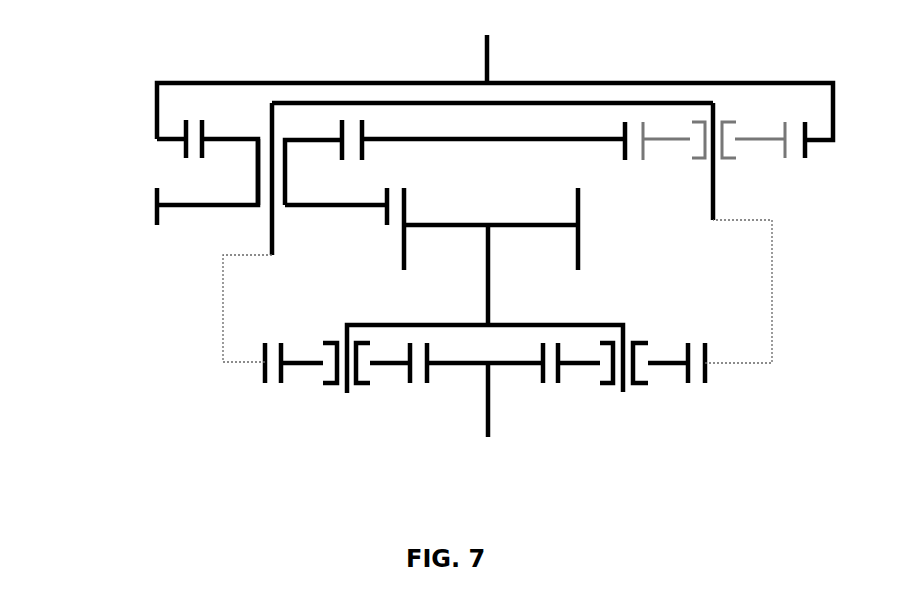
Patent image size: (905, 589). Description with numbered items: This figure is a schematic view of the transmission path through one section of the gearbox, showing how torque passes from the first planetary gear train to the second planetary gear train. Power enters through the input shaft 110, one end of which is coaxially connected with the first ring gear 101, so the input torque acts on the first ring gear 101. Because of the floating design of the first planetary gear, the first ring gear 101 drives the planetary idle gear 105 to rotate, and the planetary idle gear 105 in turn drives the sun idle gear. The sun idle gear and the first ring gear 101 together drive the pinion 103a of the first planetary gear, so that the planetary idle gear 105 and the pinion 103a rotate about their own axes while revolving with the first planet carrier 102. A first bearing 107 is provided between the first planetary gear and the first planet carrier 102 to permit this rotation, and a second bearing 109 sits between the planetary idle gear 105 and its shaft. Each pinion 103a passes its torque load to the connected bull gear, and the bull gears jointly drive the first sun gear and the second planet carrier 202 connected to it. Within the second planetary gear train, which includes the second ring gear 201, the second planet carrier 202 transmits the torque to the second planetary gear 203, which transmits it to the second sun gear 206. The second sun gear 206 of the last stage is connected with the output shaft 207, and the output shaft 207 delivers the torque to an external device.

The first ring gear 101 is at (142, 112).
The first planet carrier 102 is at (376, 104).
The pinion 103a is at (246, 186).
The planetary idle gear 105 is at (767, 124).
The first bearing 107 is at (282, 223).
The second bearing 109 is at (706, 186).
The input shaft 110 is at (503, 53).
The second ring gear 201 is at (717, 389).
The second planet carrier 202 is at (333, 333).
The second planetary gear 203 is at (695, 399).
The second sun gear 206 is at (415, 255).
The output shaft 207 is at (479, 424).